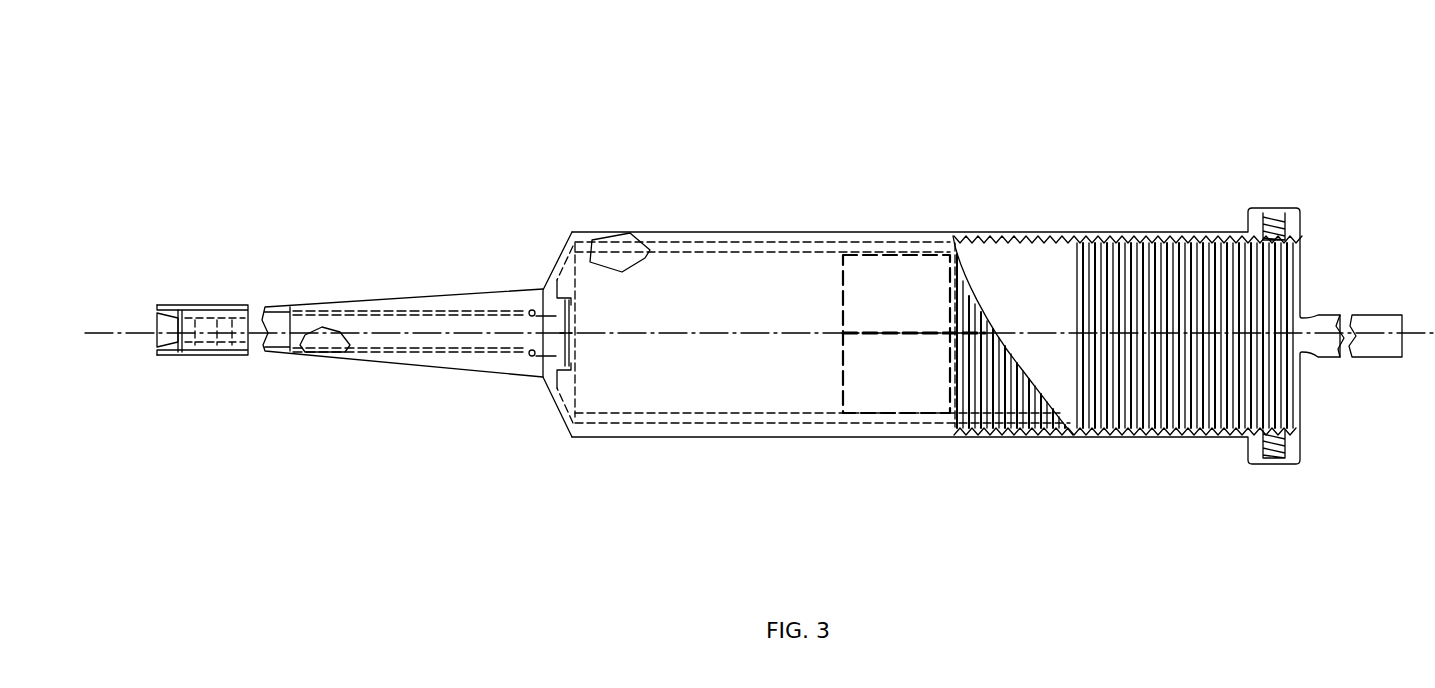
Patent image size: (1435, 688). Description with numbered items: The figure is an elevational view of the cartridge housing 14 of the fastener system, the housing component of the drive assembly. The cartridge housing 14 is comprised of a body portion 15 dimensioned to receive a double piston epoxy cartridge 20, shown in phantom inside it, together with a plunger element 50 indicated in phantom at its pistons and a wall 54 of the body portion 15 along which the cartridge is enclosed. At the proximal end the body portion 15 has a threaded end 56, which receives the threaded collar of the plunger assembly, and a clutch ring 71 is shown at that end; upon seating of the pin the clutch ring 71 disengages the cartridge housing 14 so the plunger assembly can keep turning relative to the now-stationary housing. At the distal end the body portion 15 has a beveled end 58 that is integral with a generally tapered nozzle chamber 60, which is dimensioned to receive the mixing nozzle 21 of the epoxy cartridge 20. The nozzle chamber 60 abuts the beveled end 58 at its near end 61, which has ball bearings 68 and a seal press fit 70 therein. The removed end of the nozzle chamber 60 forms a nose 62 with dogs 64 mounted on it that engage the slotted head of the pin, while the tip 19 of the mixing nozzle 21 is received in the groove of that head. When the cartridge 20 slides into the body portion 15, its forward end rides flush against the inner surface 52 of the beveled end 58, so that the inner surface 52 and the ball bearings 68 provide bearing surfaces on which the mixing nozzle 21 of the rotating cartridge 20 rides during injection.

The cartridge housing 14 is at (670, 437).
The body portion 15 is at (882, 437).
The tip 19 is at (158, 317).
The epoxy cartridge 20 is at (615, 253).
The mixing nozzle 21 is at (318, 340).
The plunger rod 50 is at (835, 237).
The inner surface 52 is at (897, 242).
The barrel wall 54 is at (737, 230).
The threaded end 56 is at (1092, 237).
The beveled end 58 is at (577, 231).
The nozzle chamber 60 is at (363, 305).
The near end 61 is at (525, 305).
The nose 62 is at (185, 355).
The dogs 64 is at (162, 303).
The ball bearings 68 is at (528, 363).
The seal press fit 70 is at (545, 378).
The clutch ring 71 is at (1287, 460).